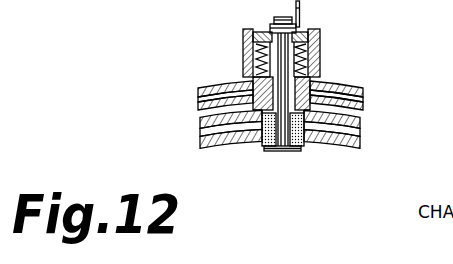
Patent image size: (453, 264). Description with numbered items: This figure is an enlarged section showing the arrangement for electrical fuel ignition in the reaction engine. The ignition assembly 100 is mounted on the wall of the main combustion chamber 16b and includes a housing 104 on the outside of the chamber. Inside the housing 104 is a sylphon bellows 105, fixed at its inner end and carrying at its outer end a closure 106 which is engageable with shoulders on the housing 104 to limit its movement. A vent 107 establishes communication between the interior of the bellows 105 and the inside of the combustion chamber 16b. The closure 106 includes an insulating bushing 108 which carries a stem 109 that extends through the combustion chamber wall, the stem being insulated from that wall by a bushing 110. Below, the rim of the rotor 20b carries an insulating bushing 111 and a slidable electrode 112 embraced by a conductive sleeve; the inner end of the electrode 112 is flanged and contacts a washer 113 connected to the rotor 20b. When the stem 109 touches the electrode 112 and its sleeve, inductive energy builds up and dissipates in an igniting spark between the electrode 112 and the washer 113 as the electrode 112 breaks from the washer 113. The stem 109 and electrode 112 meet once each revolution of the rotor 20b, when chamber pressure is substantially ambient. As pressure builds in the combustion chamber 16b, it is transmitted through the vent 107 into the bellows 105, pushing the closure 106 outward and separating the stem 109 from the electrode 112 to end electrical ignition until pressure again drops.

The ignition assembly 100 is at (289, 50).
The housing 104 is at (320, 42).
The sylphon bellows 105 is at (247, 49).
The closure 106 is at (263, 31).
The vent 107 is at (314, 83).
The insulating bushing 108 is at (307, 33).
The stem 109 is at (262, 69).
The bushing 110 is at (251, 104).
The insulating bushing 111 is at (303, 128).
The slidable electrode 112 is at (284, 152).
The washer 113 is at (261, 151).
The combustion chamber 16b is at (364, 111).
The rotor 20b is at (360, 128).